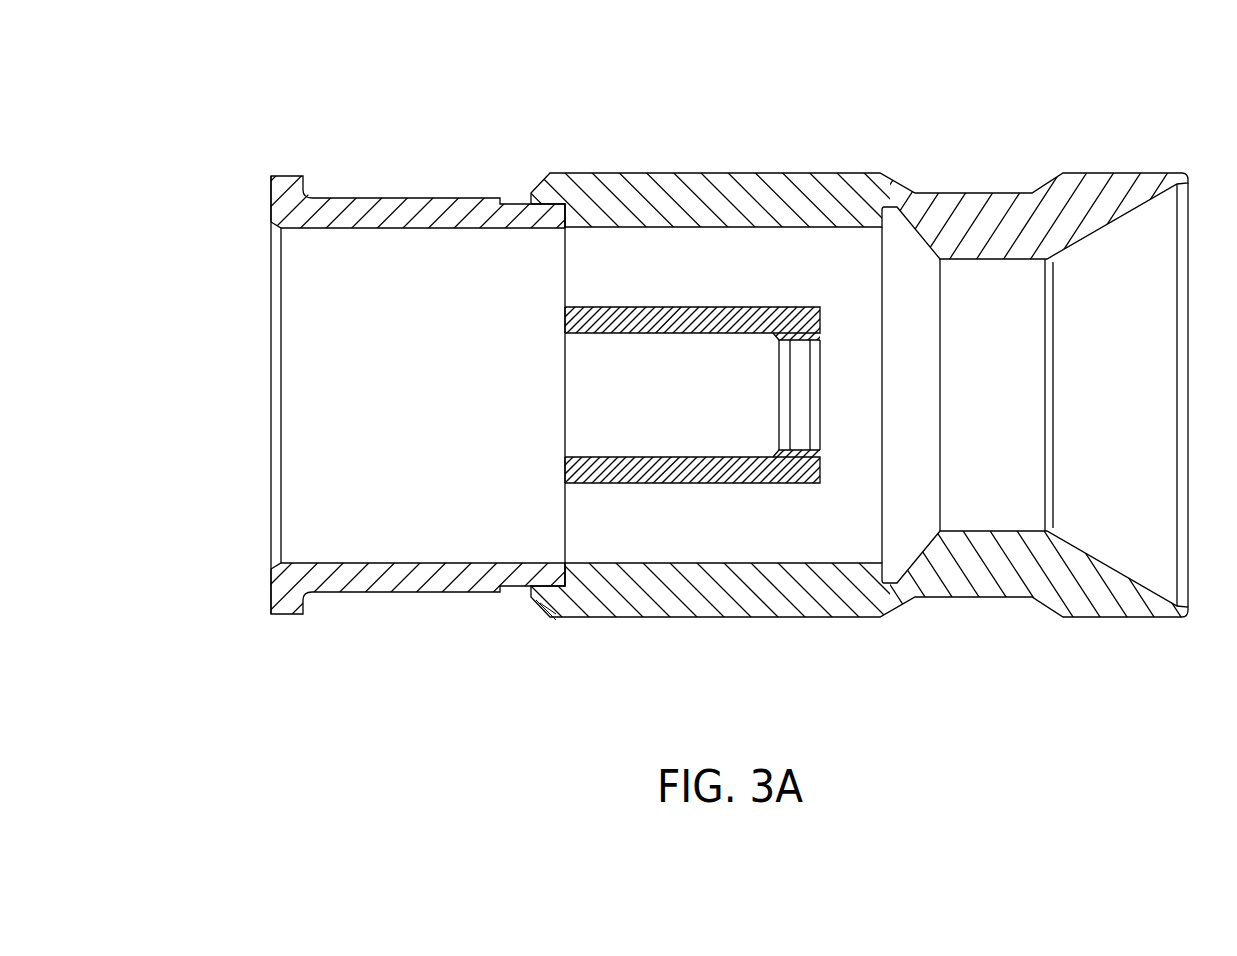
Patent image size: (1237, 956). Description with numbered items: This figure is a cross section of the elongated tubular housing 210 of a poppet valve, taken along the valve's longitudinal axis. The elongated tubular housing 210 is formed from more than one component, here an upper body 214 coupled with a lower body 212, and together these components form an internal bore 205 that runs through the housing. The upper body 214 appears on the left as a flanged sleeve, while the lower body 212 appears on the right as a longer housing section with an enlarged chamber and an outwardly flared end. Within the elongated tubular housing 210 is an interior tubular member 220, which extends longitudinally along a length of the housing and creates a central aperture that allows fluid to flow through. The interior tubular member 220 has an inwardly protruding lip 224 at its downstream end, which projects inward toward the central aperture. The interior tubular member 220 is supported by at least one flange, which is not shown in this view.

The elongated tubular housing 210 is at (701, 383).
The internal bore 205 is at (406, 427).
The upper body 214 is at (386, 596).
The lower body 212 is at (1190, 628).
The interior tubular member 220 is at (717, 302).
The inwardly protruding lip 224 is at (805, 307).